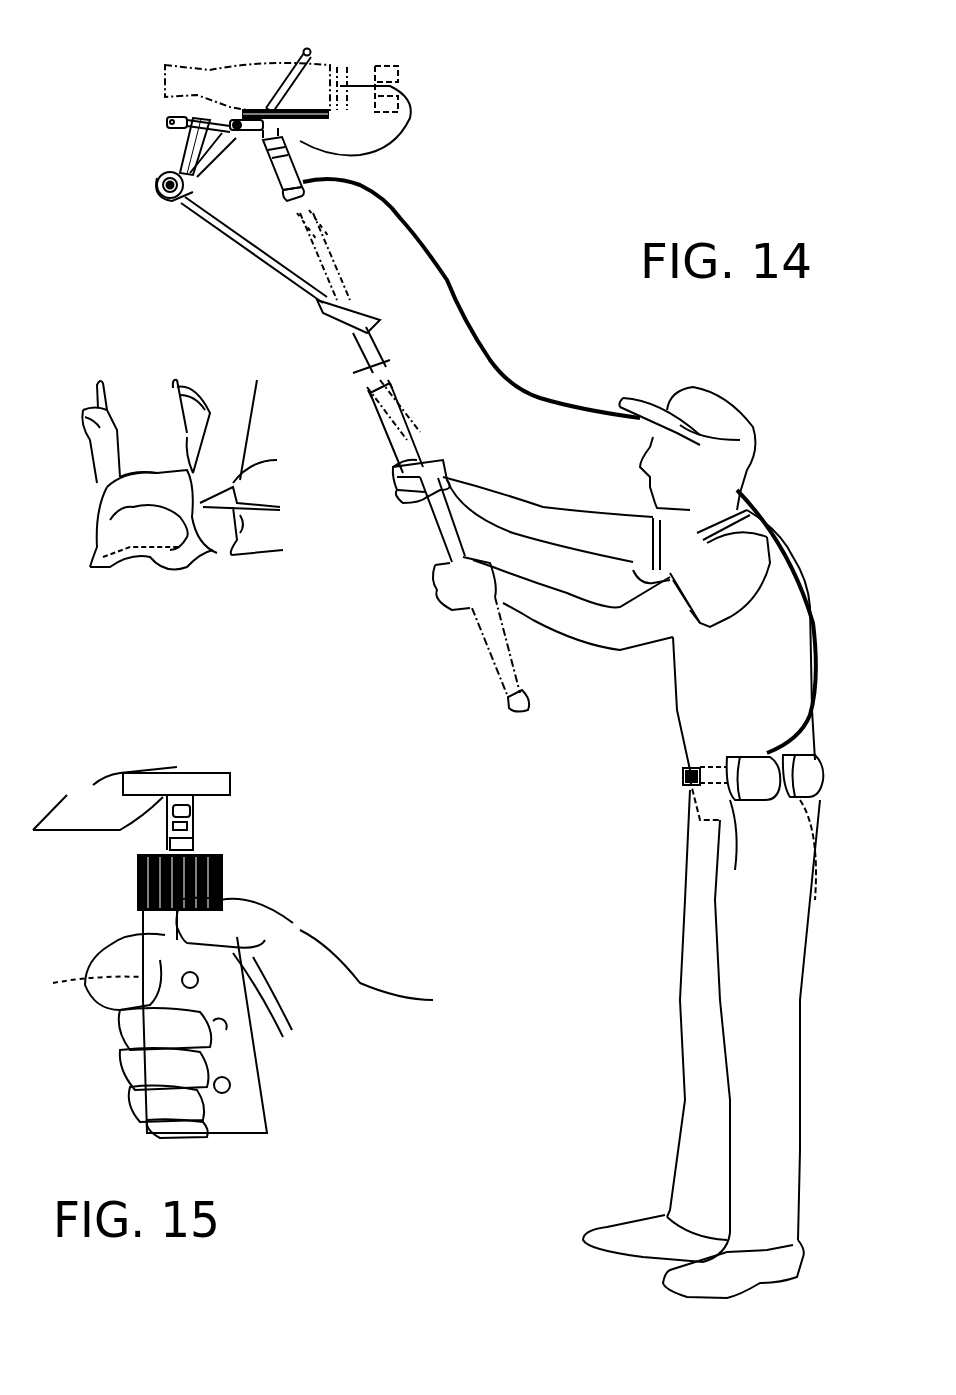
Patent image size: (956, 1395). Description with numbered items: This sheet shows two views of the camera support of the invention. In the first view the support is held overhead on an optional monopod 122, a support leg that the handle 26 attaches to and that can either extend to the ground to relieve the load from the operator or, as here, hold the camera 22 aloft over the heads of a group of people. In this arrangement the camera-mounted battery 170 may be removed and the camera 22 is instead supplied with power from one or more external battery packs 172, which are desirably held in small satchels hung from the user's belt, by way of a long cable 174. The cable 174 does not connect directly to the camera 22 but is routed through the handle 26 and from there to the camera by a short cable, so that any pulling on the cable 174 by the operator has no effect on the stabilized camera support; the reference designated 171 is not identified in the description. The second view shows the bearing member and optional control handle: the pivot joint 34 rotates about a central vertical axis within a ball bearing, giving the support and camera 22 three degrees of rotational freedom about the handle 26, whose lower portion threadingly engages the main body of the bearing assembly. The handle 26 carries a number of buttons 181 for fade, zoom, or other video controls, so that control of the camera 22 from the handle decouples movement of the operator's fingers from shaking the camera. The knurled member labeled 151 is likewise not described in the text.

In FIG. 14, the camera 22 is at (190, 78).
In FIG. 14, the tool housing 171 is at (338, 62).
In FIG. 14, the camera-mounted battery 170 is at (392, 75).
In FIG. 14, the cable 174 is at (441, 261).
In FIG. 14, the monopod 122 is at (443, 530).
In FIG. 14, the battery pack 172 is at (793, 800).
In FIG. 15, the pivot joint 34 is at (207, 820).
In FIG. 15, the knurled knob 151 is at (223, 873).
In FIG. 15, the buttons 181 is at (228, 1080).
In FIG. 15, the handle 26 is at (253, 1113).